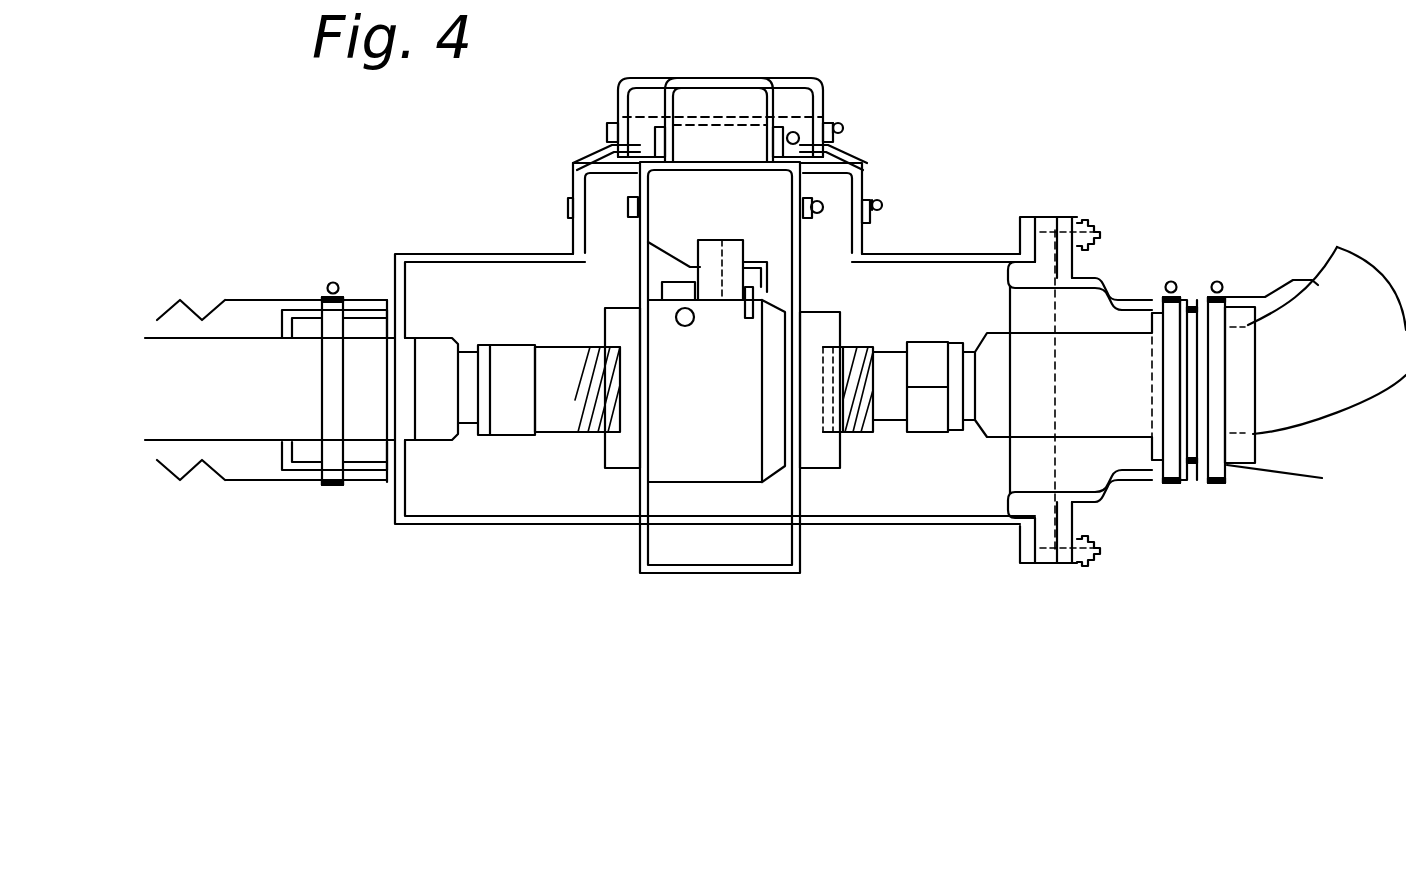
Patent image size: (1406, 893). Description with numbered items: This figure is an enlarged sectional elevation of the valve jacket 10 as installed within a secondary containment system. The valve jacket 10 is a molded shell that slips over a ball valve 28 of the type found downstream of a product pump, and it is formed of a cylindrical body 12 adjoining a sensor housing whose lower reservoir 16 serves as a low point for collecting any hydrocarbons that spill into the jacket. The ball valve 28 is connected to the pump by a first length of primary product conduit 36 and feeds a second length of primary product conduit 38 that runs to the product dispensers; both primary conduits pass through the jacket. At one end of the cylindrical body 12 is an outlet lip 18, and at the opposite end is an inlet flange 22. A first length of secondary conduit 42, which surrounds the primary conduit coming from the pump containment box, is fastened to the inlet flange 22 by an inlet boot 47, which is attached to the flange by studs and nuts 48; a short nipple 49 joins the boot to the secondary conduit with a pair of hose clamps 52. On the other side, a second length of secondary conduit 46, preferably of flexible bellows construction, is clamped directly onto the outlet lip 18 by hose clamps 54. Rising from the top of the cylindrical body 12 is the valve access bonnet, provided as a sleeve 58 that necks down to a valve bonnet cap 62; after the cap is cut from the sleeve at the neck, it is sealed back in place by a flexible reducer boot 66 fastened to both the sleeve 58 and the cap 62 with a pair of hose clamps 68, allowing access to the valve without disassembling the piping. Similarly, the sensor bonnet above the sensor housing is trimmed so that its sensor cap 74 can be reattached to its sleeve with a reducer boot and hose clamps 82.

The valve jacket 10 is at (480, 225).
The cylindrical body 12 is at (492, 517).
The lower reservoir 16 is at (780, 548).
The outlet lip 18 is at (373, 467).
The inlet flange 22 is at (1047, 560).
The ball valve 28 is at (692, 425).
The first length of primary product conduit 36 is at (1107, 355).
The second length of primary product conduit 38 is at (253, 420).
The first length of secondary conduit 42 is at (1262, 297).
The second length of secondary conduit 46 is at (220, 300).
The inlet boot 47 is at (1118, 474).
The studs and nuts 48 is at (1090, 558).
The short nipple 49 is at (1242, 468).
The hose clamps 52 is at (1237, 262).
The hose clamps 54 is at (333, 282).
The sleeve 58 is at (573, 240).
The valve bonnet cap 62 is at (623, 82).
The flexible reducer boot 66 is at (576, 162).
The hose clamps 68 is at (843, 126).
The sensor cap 74 is at (738, 78).
The hose clamps 82 is at (794, 132).